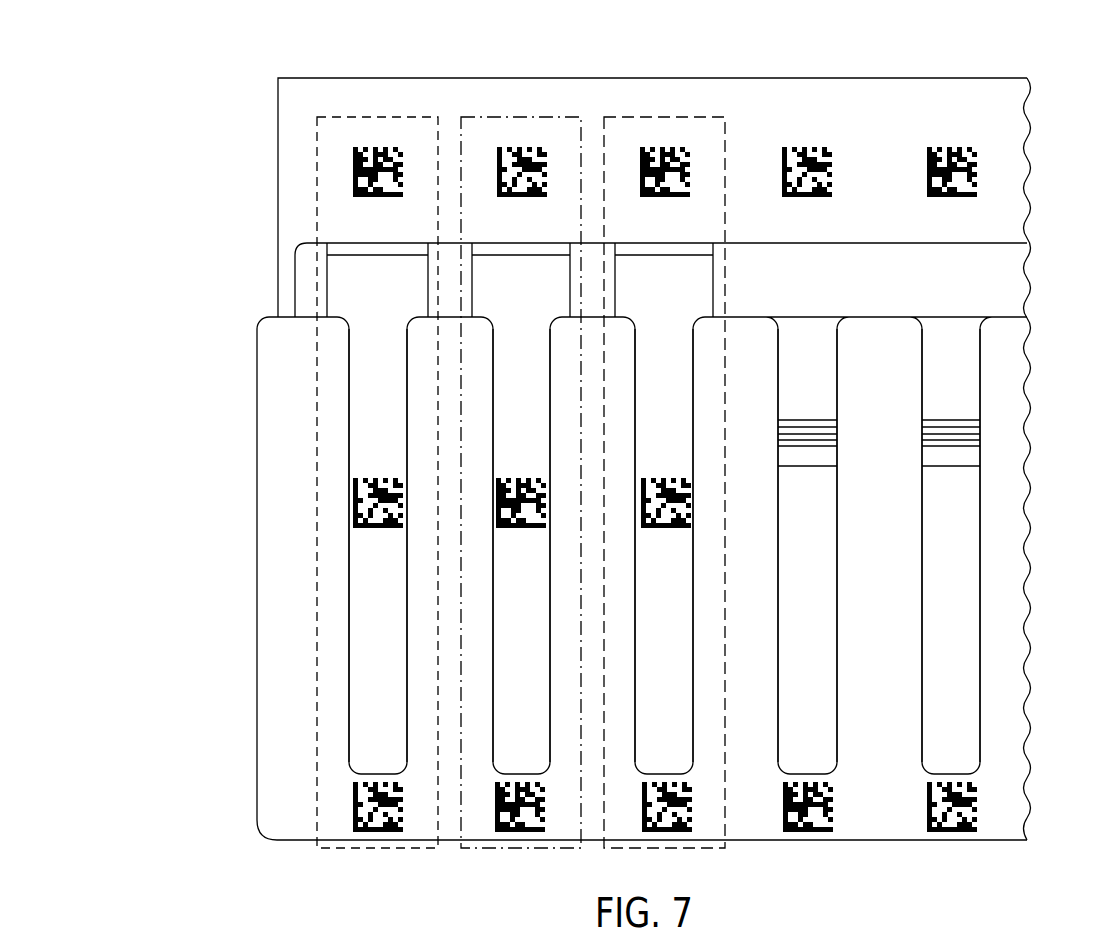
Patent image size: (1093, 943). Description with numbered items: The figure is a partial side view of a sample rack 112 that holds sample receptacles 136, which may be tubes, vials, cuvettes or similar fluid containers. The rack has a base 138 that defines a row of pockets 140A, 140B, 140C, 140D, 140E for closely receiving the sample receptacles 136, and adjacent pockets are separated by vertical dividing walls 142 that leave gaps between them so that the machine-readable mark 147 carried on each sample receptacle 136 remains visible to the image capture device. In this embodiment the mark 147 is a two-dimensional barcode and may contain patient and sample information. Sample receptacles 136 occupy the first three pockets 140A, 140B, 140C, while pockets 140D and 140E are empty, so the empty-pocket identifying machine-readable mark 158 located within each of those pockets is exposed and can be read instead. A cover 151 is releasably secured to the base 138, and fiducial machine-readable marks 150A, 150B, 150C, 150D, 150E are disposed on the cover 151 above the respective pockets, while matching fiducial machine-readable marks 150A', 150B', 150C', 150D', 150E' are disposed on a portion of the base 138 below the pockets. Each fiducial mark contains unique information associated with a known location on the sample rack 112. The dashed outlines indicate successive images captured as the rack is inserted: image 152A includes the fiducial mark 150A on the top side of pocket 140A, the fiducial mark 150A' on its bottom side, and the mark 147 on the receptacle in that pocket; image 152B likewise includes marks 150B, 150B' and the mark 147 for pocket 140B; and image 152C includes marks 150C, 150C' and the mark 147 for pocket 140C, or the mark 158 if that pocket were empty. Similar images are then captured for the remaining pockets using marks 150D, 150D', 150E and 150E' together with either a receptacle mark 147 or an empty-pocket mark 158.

The sample rack 112 is at (226, 109).
The cover 151 is at (298, 93).
The base 138 is at (282, 826).
The vertical dividing wall 142 is at (282, 712).
The pocket 140A is at (358, 750).
The pocket 140B is at (498, 760).
The pocket 140C is at (678, 748).
The pocket 140D is at (808, 357).
The pocket 140E is at (955, 357).
The sample receptacle 136 is at (492, 270).
The image 152A is at (315, 412).
The image 152B is at (506, 110).
The image 152C is at (643, 110).
The fiducial machine-readable mark 150A is at (311, 182).
The fiducial machine-readable mark 150B is at (530, 111).
The fiducial machine-readable mark 150C is at (680, 114).
The fiducial machine-readable mark 150D is at (800, 116).
The fiducial machine-readable mark 150E is at (953, 116).
The machine-readable mark 147 is at (363, 480).
The empty-pocket identifying machine-readable mark 158 is at (814, 455).
The fiducial machine-readable mark 150A' is at (283, 763).
The fiducial machine-readable mark 150B' is at (529, 839).
The fiducial machine-readable mark 150C' is at (667, 837).
The fiducial machine-readable mark 150D' is at (817, 840).
The fiducial machine-readable mark 150E' is at (952, 841).